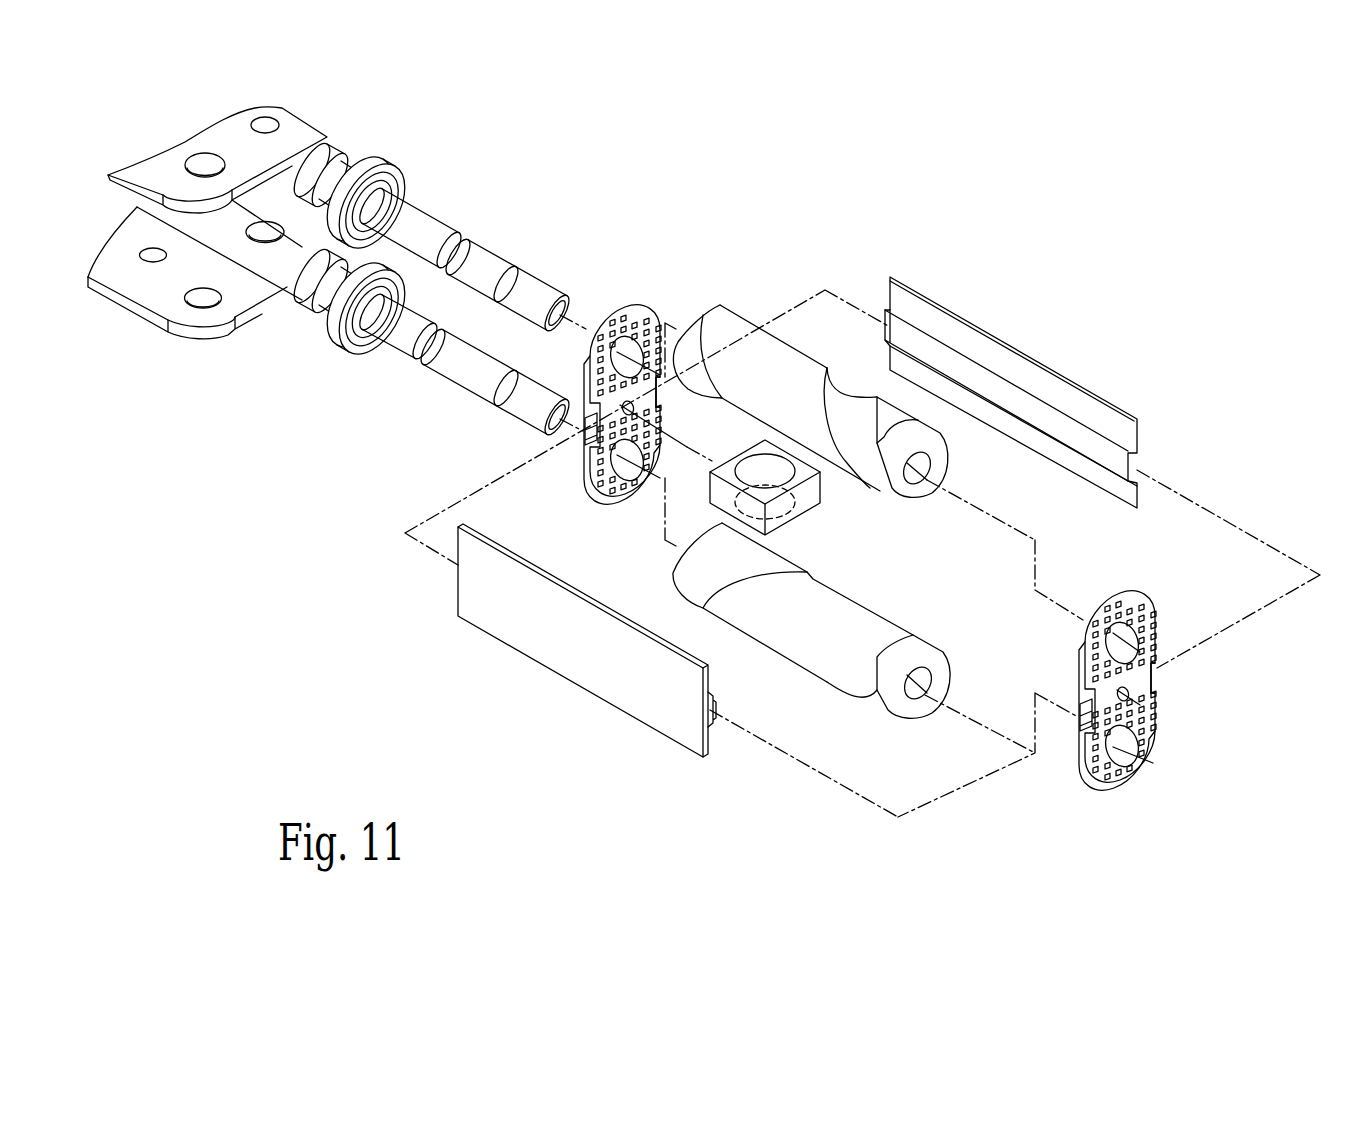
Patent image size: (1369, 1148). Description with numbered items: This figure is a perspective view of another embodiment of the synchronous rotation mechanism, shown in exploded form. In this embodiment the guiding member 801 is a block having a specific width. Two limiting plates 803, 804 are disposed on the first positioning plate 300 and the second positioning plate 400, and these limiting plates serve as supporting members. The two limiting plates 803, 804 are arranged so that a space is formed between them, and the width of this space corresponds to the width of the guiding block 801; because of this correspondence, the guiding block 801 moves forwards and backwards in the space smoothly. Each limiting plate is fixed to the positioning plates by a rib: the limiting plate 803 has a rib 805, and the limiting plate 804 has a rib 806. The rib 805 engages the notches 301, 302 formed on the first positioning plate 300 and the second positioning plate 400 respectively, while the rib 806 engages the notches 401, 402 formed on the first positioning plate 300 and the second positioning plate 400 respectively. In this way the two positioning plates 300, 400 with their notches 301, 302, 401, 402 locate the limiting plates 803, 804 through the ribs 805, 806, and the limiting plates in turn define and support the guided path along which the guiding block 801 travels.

The first positioning plate 300 is at (612, 317).
The notch 301 is at (675, 374).
The notch 302 is at (586, 424).
The second positioning plate 400 is at (1113, 598).
The notch 401 is at (1156, 678).
The notch 402 is at (1080, 725).
The guiding member 801 is at (718, 490).
The limiting plate 803 is at (588, 665).
The limiting plate 804 is at (1073, 372).
The rib 805 is at (714, 703).
The rib 806 is at (1113, 458).